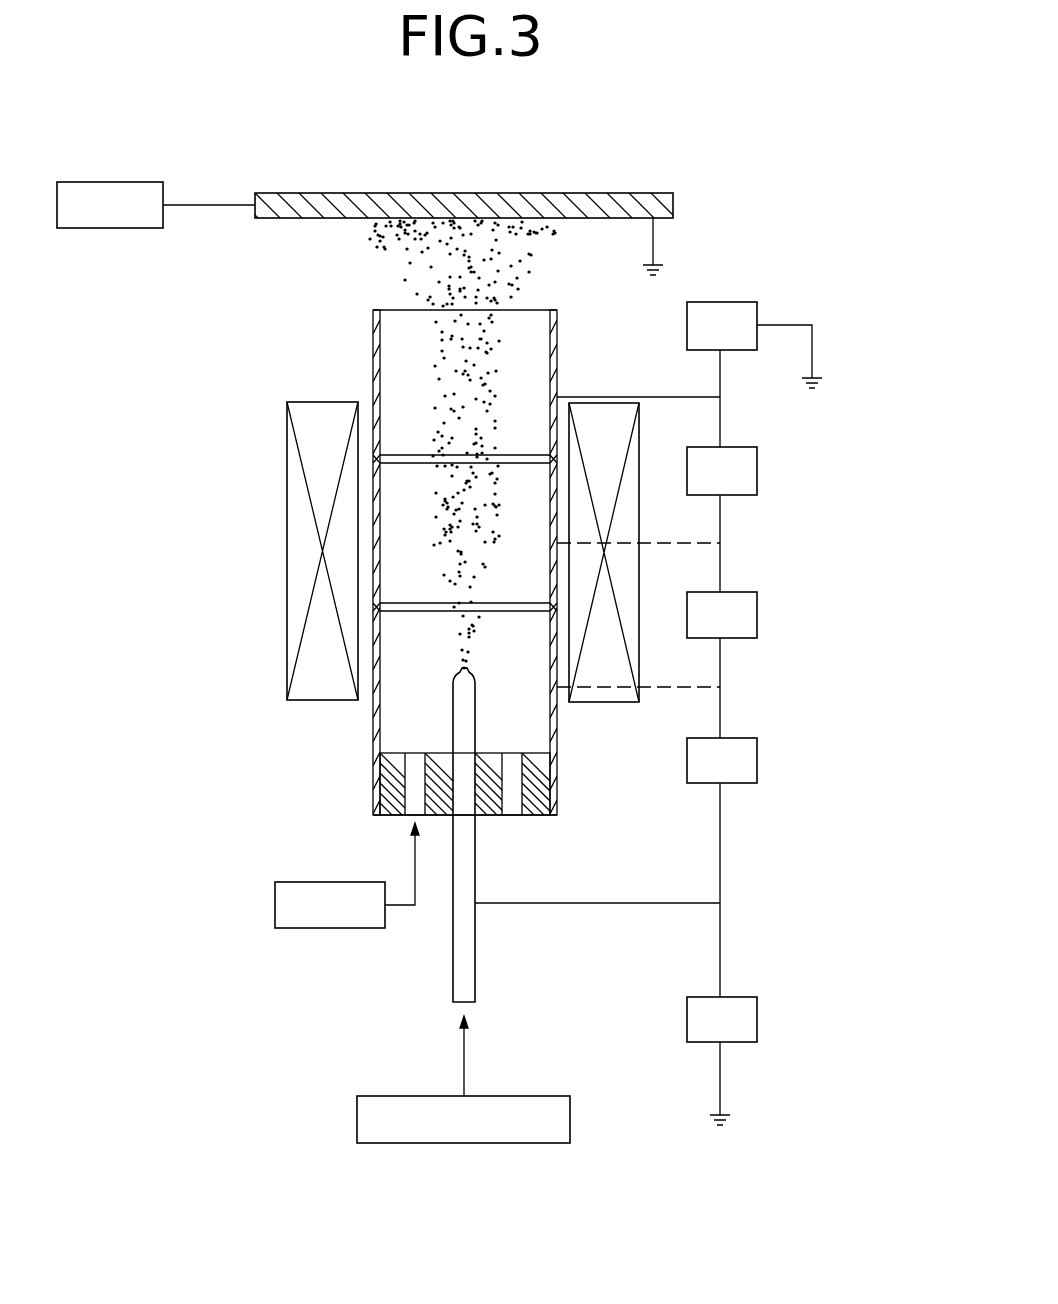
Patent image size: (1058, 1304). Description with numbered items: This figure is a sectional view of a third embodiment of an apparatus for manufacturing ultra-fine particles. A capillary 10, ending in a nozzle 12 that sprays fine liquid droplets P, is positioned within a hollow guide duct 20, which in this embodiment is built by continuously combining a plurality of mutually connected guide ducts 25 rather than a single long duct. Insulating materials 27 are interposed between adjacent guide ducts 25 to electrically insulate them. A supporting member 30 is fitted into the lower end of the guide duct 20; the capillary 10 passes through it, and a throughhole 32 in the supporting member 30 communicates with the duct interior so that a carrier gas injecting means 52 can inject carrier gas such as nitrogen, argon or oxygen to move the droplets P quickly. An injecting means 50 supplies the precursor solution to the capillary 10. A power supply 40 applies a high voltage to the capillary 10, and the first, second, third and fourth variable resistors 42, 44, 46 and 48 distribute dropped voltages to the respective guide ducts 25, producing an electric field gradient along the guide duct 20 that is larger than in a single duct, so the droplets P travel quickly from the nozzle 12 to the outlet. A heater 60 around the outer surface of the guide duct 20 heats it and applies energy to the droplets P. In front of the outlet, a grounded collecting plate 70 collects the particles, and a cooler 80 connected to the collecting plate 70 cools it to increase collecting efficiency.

The capillary 10 is at (455, 733).
The nozzle 12 is at (470, 672).
The guide duct 20 is at (423, 636).
The guide ducts 25 is at (373, 378).
The insulating materials 27 is at (373, 461).
The supporting member 30 is at (547, 790).
The throughhole 32 is at (513, 815).
The power supply 40 is at (757, 1018).
The first variable resistor 42 is at (757, 760).
The second variable resistor 44 is at (757, 615).
The third variable resistor 46 is at (757, 470).
The fourth variable resistor 48 is at (720, 302).
The injecting means 50 is at (465, 1143).
The carrier gas injecting means 52 is at (328, 928).
The heater 60 is at (604, 402).
The collecting plate 70 is at (673, 205).
The cooler 80 is at (108, 228).
The sprayed liquid droplets P is at (448, 360).